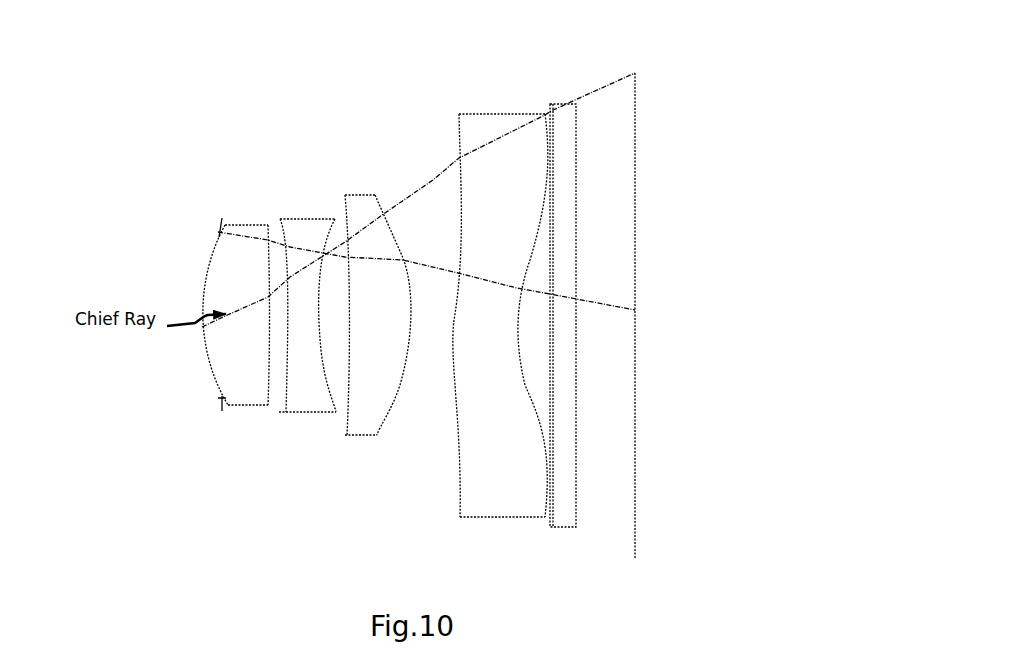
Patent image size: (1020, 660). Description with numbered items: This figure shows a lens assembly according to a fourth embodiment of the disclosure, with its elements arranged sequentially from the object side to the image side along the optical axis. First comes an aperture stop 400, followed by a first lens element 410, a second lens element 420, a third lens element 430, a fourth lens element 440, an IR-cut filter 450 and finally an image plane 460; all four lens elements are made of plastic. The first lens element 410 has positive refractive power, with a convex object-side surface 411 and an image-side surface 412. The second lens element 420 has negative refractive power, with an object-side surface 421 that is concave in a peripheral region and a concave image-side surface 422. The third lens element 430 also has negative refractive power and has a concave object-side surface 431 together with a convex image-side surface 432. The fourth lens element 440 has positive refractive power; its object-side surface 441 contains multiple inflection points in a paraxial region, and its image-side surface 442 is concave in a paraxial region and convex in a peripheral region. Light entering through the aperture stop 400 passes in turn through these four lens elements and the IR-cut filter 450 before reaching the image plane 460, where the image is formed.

The aperture stop 400 is at (358, 293).
The first lens element 410 is at (216, 308).
The object-side surface of the first lens element 411 is at (212, 371).
The image-side surface of the first lens element 412 is at (268, 347).
The second lens element 420 is at (287, 312).
The object-side surface of the second lens element 421 is at (287, 378).
The image-side surface of the second lens element 422 is at (326, 370).
The third lens element 430 is at (357, 320).
The object-side surface of the third lens element 431 is at (345, 427).
The image-side surface of the third lens element 432 is at (397, 391).
The fourth lens element 440 is at (476, 298).
The object-side surface of the fourth lens element 441 is at (460, 471).
The image-side surface of the fourth lens element 442 is at (547, 471).
The IR-cut filter 450 is at (562, 103).
The image plane 460 is at (640, 114).